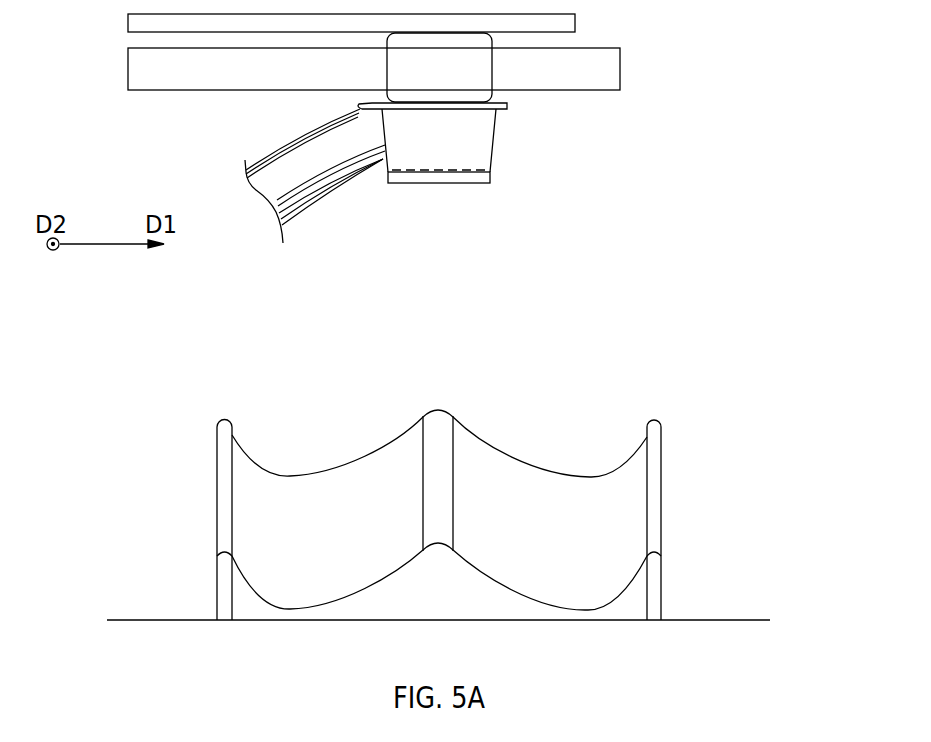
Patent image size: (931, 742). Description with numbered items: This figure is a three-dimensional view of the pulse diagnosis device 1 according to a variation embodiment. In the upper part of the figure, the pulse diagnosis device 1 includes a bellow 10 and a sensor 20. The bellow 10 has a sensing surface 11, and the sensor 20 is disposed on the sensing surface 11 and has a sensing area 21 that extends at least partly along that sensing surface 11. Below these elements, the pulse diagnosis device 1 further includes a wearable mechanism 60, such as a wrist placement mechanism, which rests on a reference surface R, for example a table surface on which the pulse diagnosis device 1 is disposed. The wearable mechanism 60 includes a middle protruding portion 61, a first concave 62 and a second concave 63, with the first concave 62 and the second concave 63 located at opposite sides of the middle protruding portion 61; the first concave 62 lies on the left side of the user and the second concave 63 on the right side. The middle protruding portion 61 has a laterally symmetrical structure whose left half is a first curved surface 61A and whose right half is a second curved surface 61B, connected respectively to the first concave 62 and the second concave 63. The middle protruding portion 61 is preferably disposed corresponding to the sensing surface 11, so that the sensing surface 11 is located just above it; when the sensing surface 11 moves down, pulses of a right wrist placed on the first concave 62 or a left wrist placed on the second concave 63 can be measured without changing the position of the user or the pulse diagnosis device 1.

The pulse diagnosis device 1 is at (456, 128).
The bellow 10 is at (457, 118).
The sensing surface 11 is at (465, 170).
The sensor 20 is at (495, 191).
The sensing area 21 is at (467, 183).
The wearable mechanism 60 is at (504, 421).
The middle protruding portion 61 is at (566, 387).
The first curved surface 61A is at (415, 453).
The second curved surface 61B is at (467, 453).
The first concave 62 is at (333, 574).
The second concave 63 is at (586, 574).
The reference surface R is at (601, 655).